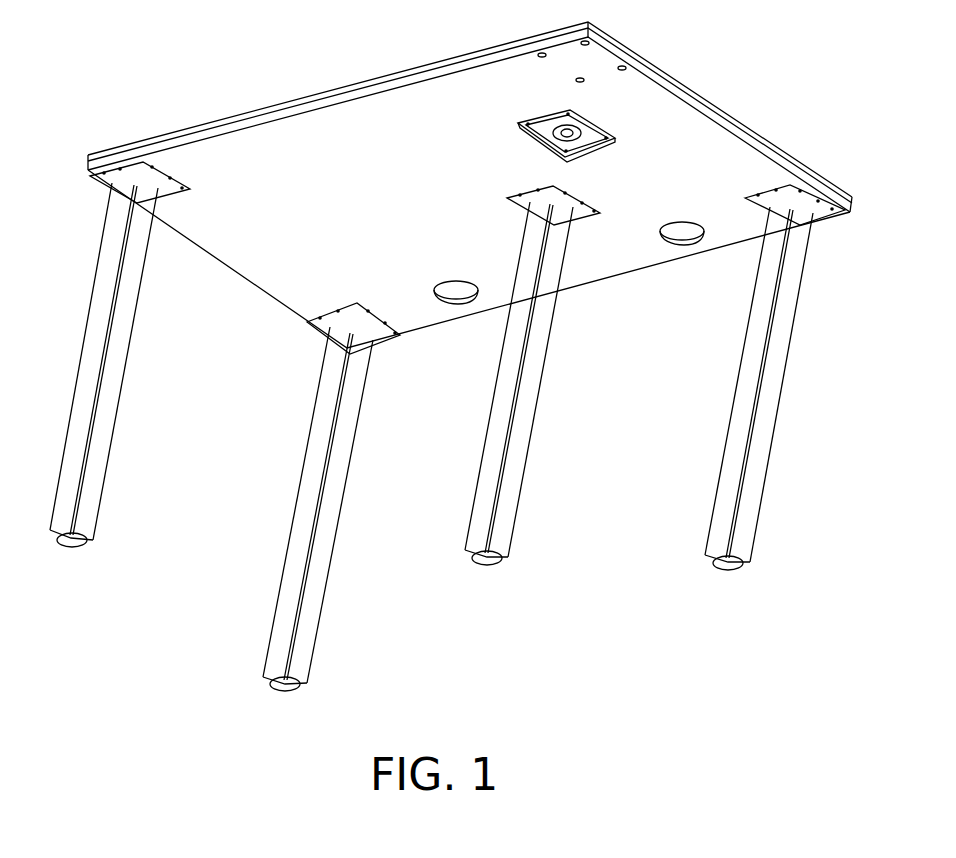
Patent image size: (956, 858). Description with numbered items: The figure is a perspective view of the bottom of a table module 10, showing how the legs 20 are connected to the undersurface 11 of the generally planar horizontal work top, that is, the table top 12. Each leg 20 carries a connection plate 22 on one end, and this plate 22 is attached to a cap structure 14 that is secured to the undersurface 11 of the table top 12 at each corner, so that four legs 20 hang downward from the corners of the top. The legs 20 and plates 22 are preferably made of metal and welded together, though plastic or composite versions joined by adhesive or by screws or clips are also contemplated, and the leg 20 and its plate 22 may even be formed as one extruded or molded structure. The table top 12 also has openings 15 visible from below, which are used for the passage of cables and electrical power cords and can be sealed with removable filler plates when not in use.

The table module 10 is at (143, 646).
The undersurface 11 is at (378, 186).
The table top 12 is at (258, 114).
The cap structure 14 is at (602, 158).
The opening 15 is at (683, 243).
The leg 20 is at (322, 617).
The connection plate 22 is at (583, 224).